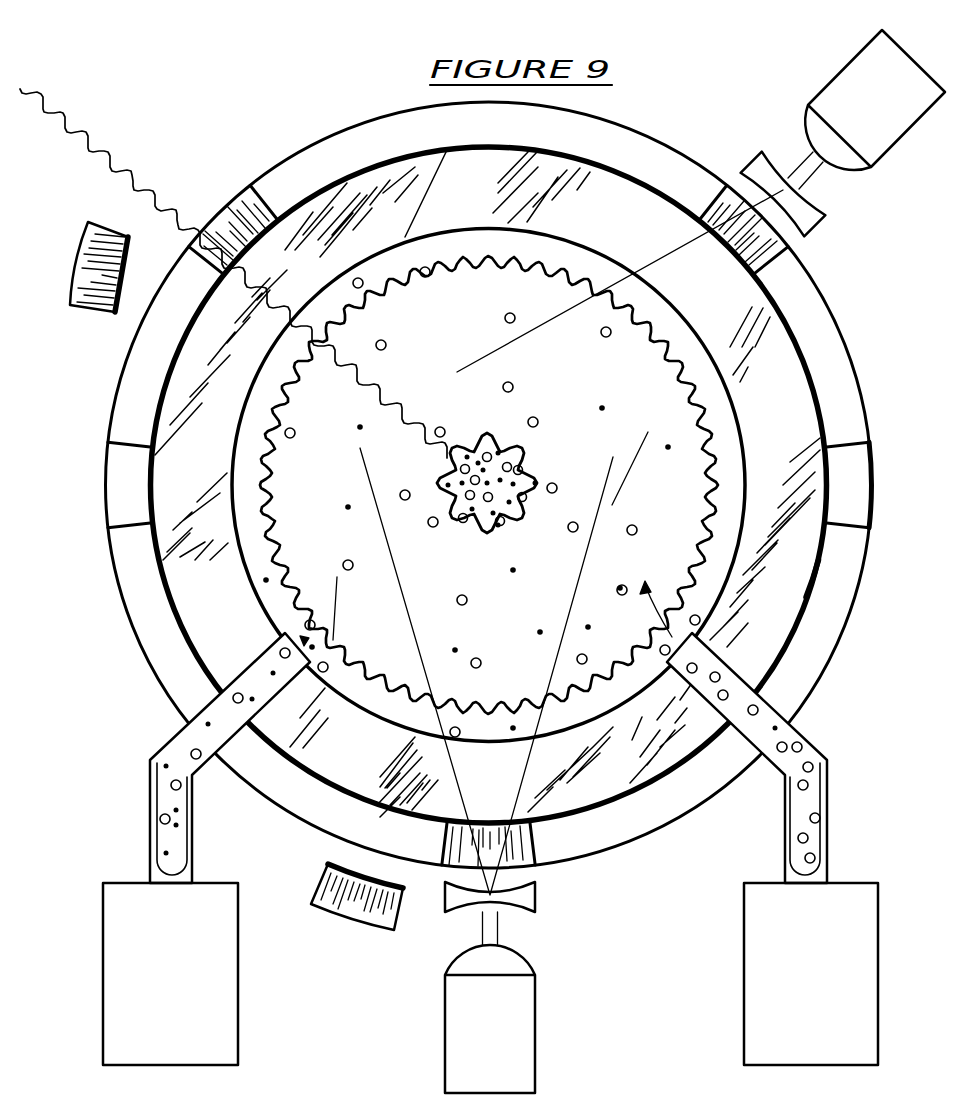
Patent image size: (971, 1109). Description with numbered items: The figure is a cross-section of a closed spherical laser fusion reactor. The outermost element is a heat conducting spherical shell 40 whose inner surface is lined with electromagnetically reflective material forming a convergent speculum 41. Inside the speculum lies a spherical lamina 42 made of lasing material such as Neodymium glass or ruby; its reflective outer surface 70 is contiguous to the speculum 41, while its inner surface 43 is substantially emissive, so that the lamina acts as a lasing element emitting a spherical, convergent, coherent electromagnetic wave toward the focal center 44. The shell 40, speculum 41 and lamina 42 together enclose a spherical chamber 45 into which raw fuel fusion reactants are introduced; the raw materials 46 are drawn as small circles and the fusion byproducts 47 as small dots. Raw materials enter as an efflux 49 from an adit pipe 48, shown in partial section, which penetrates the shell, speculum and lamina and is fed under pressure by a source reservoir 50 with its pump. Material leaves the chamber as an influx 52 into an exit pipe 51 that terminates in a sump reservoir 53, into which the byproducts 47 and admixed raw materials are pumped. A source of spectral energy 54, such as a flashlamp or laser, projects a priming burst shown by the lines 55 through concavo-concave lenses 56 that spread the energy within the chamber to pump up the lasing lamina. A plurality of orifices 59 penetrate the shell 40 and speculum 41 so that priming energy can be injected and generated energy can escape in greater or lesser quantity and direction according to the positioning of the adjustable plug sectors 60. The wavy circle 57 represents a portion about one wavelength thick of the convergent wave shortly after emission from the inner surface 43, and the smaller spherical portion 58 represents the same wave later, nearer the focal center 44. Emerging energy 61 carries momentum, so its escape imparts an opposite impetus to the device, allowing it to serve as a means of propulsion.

The heat conducting spherical shell 40 is at (800, 288).
The convergent speculum 41 is at (800, 360).
The spherical lamina 42 is at (790, 413).
The inner surface 43 is at (586, 258).
The focal center 44 is at (487, 480).
The spherical chamber 45 is at (497, 619).
The raw materials 46 is at (636, 531).
The byproducts 47 is at (602, 406).
The adit pipe 48 is at (830, 872).
The efflux 49 is at (650, 613).
The source reservoir 50 is at (858, 916).
The exit pipe 51 is at (190, 872).
The influx 52 is at (306, 642).
The sump reservoir 53 is at (218, 927).
The source of spectral energy 54 is at (858, 76).
The lines 55 is at (552, 320).
The concavo-concave lenses 56 is at (815, 212).
The wavy circle 57 is at (713, 472).
The smaller spherical portion 58 is at (533, 460).
The orifices 59 is at (237, 208).
The adjustable plug sectors 60 is at (78, 266).
The emerging energy 61 is at (57, 102).
The outer surface 70 is at (798, 570).